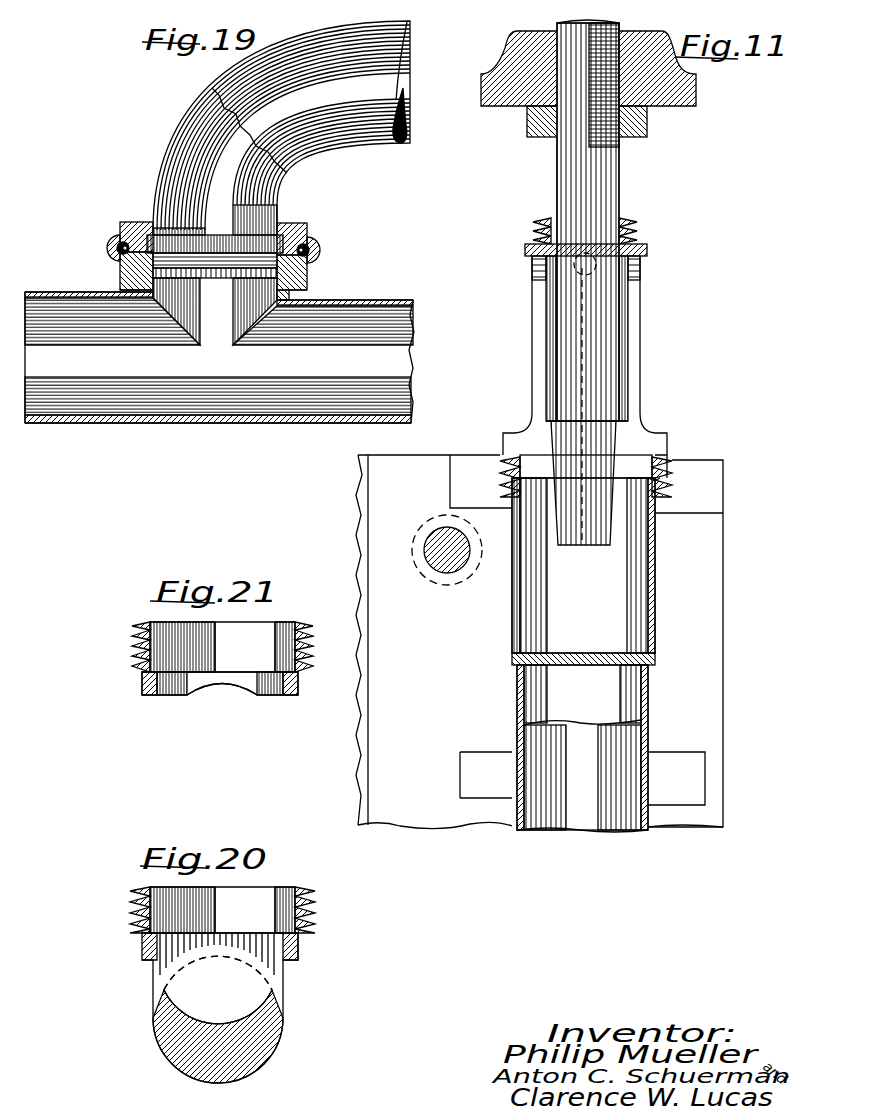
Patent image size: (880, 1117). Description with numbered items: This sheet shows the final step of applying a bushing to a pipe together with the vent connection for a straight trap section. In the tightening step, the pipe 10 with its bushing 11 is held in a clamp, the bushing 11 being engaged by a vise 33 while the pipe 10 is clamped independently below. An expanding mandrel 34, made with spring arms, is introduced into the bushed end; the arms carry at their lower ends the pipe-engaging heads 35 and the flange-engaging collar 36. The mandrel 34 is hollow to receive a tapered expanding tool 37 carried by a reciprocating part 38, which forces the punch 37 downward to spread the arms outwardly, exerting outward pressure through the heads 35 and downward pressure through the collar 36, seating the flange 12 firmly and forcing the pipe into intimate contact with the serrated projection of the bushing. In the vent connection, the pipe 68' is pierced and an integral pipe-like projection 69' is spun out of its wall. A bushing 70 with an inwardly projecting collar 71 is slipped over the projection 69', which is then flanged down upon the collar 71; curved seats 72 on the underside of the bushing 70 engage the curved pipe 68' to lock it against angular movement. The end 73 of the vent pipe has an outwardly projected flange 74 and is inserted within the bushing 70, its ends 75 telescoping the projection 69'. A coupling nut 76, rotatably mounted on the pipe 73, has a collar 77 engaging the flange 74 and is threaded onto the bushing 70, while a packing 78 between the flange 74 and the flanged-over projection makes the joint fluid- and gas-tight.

In FIG. 11, the pipe 10 is at (658, 577).
In FIG. 11, the bushing 11 is at (668, 463).
In FIG. 11, the flange 12 is at (667, 460).
In FIG. 11, the vise 33 is at (656, 500).
In FIG. 11, the expanding mandrel 34 is at (632, 356).
In FIG. 11, the pipe-engaging heads 35 is at (533, 462).
In FIG. 11, the flange-engaging collar 36 is at (655, 455).
In FIG. 11, the tapered expanding tool 37 is at (585, 540).
In FIG. 11, the reciprocating part 38 is at (677, 103).
In FIG. 19, the pipe 68' is at (222, 346).
In FIG. 20, the pipe 68' is at (241, 1008).
In FIG. 19, the pipe-like projection 69' is at (98, 280).
In FIG. 19, the bushing 70 is at (310, 270).
In FIG. 21, the bushing 70 is at (132, 656).
In FIG. 20, the bushing 70 is at (130, 917).
In FIG. 19, the collar 71 is at (302, 290).
In FIG. 21, the collar 71 is at (148, 686).
In FIG. 20, the collar 71 is at (150, 953).
In FIG. 21, the curved seats 72 is at (230, 686).
In FIG. 20, the curved seats 72 is at (236, 955).
In FIG. 19, the end of vent pipe 73 is at (279, 200).
In FIG. 19, the flange 74 is at (315, 240).
In FIG. 19, the ends of vent pipe 75 is at (227, 278).
In FIG. 19, the coupling nut 76 is at (113, 238).
In FIG. 19, the collar 77 is at (133, 222).
In FIG. 19, the packing 78 is at (120, 267).